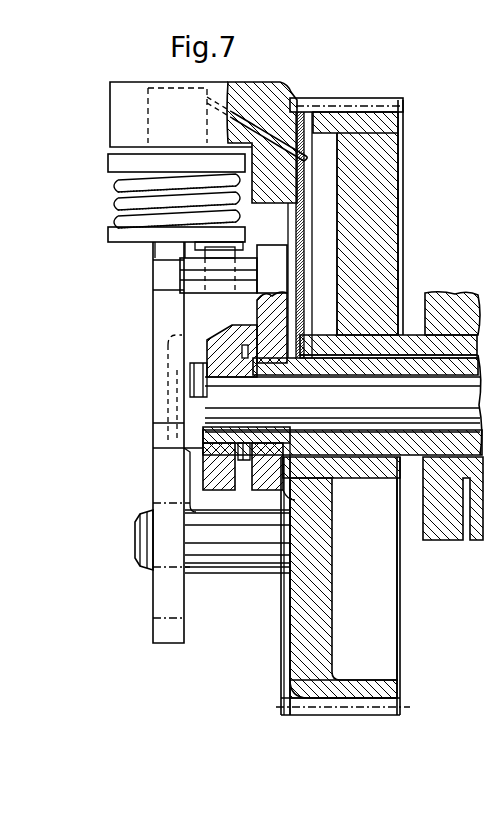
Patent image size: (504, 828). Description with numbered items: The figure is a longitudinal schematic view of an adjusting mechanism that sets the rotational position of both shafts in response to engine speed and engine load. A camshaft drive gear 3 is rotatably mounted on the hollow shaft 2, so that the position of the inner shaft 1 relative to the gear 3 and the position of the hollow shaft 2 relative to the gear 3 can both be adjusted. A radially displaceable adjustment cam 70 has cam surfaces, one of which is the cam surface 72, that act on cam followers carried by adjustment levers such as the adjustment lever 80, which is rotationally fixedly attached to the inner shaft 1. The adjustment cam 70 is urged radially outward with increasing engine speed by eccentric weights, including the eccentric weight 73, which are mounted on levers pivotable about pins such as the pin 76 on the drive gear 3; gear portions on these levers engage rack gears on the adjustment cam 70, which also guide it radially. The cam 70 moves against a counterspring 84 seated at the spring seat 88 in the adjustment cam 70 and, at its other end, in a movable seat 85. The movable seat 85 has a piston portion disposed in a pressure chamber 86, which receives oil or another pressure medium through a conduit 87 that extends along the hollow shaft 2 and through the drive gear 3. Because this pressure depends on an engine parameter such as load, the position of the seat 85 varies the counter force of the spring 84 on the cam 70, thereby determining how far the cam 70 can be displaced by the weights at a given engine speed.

The inner shaft 1 is at (362, 437).
The hollow shaft 2 is at (413, 370).
The camshaft drive gear 3 is at (405, 117).
The adjustment cam 70 is at (170, 320).
The cam surface 72 is at (164, 346).
The eccentric weight 73 is at (178, 370).
The pin 76 is at (241, 566).
The adjustment lever 80 is at (222, 308).
The counterspring 84 is at (125, 196).
The movable seat 85 is at (125, 163).
The pressure chamber 86 is at (207, 122).
The conduit 87 is at (293, 93).
The spring seat 88 is at (118, 235).